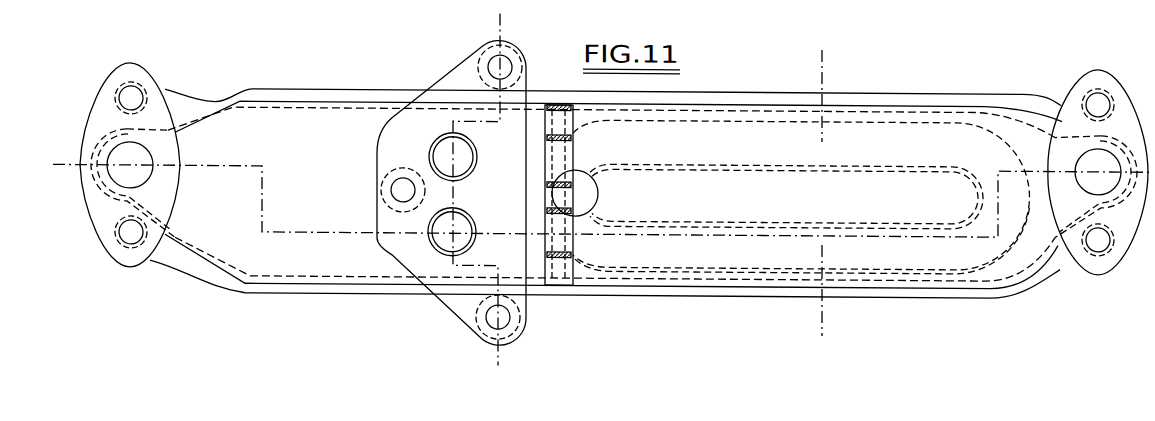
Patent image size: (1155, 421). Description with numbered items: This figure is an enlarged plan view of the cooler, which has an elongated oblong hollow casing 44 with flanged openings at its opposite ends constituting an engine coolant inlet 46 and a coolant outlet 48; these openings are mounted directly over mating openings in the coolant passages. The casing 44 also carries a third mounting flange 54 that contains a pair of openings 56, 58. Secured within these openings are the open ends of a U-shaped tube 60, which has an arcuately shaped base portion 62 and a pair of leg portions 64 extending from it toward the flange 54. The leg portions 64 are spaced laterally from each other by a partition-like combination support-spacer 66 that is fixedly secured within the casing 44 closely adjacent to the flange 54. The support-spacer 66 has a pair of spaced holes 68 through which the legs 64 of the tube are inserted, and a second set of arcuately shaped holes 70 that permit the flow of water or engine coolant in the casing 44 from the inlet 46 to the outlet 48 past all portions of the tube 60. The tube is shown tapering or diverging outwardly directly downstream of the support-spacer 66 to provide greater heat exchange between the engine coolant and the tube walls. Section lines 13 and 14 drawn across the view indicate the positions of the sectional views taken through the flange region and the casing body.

The section line 13- 13 is at (497, 25).
The section line 14- 14 is at (820, 69).
The hollow casing 44 is at (890, 102).
The engine coolant inlet 46 is at (137, 156).
The coolant outlet 48 is at (1092, 151).
The third mounting flange 54 is at (448, 79).
The opening 56 is at (431, 147).
The opening 58 is at (428, 239).
The U-shaped tube 60 is at (684, 138).
The arcuately shaped base portion 62 is at (969, 136).
The leg portions 64 is at (720, 133).
The support-spacer 66 is at (557, 268).
The spaced holes 68 is at (592, 180).
The arcuately shaped holes 70 is at (562, 119).